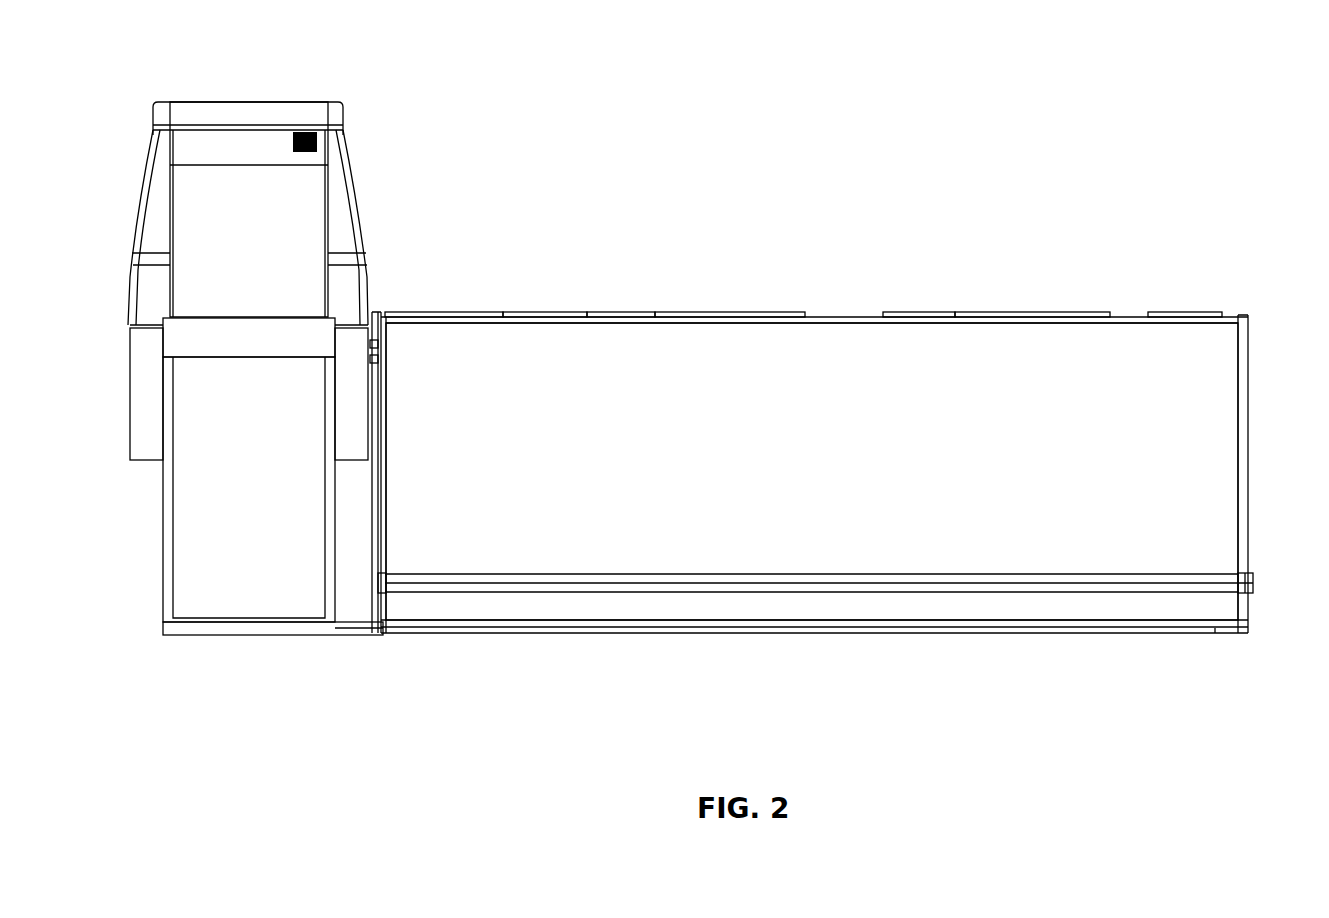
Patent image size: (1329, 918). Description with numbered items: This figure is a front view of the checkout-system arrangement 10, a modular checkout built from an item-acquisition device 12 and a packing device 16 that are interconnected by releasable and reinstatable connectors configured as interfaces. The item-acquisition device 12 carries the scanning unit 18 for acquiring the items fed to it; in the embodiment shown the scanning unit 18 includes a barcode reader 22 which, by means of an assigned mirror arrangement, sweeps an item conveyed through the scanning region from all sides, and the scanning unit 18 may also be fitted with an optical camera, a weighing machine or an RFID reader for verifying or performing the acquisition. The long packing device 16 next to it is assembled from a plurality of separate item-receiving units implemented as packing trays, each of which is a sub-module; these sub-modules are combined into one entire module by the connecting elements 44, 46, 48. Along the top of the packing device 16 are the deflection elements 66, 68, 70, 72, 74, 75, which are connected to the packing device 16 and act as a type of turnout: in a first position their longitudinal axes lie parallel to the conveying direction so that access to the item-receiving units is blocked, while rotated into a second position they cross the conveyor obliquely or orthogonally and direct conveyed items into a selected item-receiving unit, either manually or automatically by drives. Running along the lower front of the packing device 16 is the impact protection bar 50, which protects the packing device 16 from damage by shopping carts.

The checkout-system arrangement 10 is at (1018, 128).
The item-acquisition device 12 is at (280, 495).
The packing device 16 is at (568, 662).
The scanning unit 18 is at (386, 137).
The barcode reader 22 is at (243, 143).
The connecting element 44 is at (768, 478).
The connecting element 46 is at (1249, 441).
The connecting element 48 is at (377, 311).
The impact protection bar 50 is at (1190, 575).
The deflection element 66 is at (1186, 311).
The deflection element 68 is at (1053, 311).
The deflection element 70 is at (922, 311).
The deflection element 72 is at (722, 311).
The deflection element 74 is at (588, 311).
The deflection element 75 is at (443, 311).